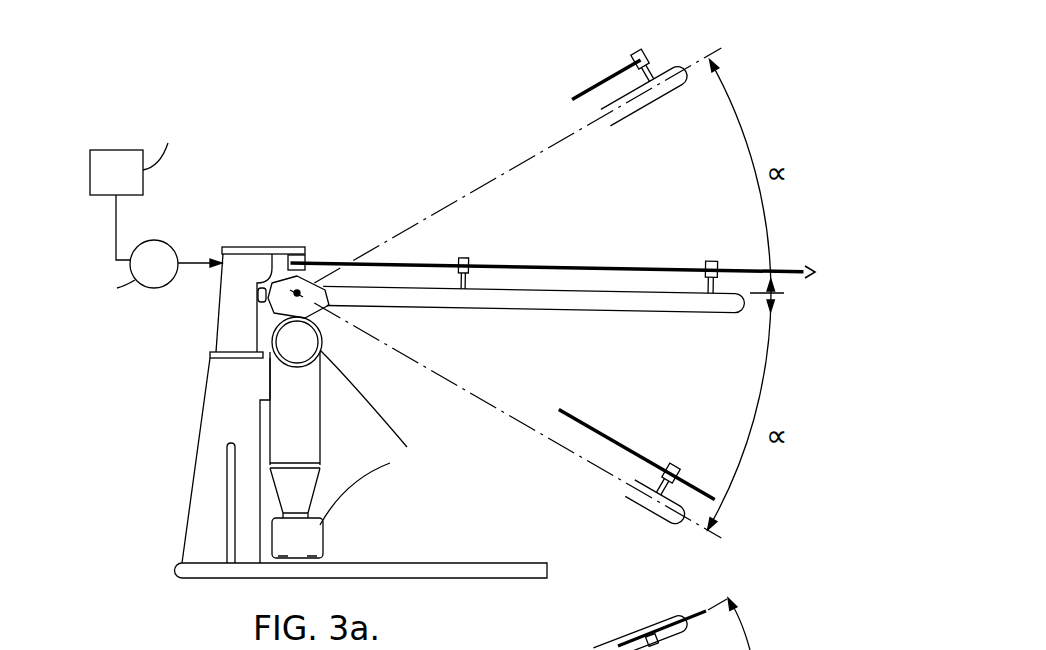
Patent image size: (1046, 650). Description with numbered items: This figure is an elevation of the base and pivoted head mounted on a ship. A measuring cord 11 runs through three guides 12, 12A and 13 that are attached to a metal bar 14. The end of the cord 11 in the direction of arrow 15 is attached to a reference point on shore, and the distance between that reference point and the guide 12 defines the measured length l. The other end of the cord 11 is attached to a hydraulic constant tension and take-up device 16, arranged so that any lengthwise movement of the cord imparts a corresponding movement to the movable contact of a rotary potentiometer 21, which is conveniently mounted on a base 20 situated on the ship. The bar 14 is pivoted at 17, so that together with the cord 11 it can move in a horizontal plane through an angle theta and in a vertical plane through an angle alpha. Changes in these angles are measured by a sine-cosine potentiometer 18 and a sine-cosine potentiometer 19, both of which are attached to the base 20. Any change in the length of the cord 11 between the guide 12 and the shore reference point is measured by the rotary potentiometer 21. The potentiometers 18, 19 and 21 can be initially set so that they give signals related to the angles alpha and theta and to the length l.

The measuring cord 11 is at (602, 265).
The guide 12 is at (306, 264).
The guide 12A is at (469, 262).
The guide 13 is at (717, 262).
The metal bar 14 is at (690, 303).
The arrow 15 is at (822, 271).
The hydraulic constant tension and take-up device 16 is at (200, 183).
The pivot 17 is at (302, 297).
The sine-cosine potentiometer 18 is at (316, 528).
The sine-cosine potentiometer 19 is at (307, 345).
The base 20 is at (201, 485).
The rotary potentiometer 21 is at (127, 280).